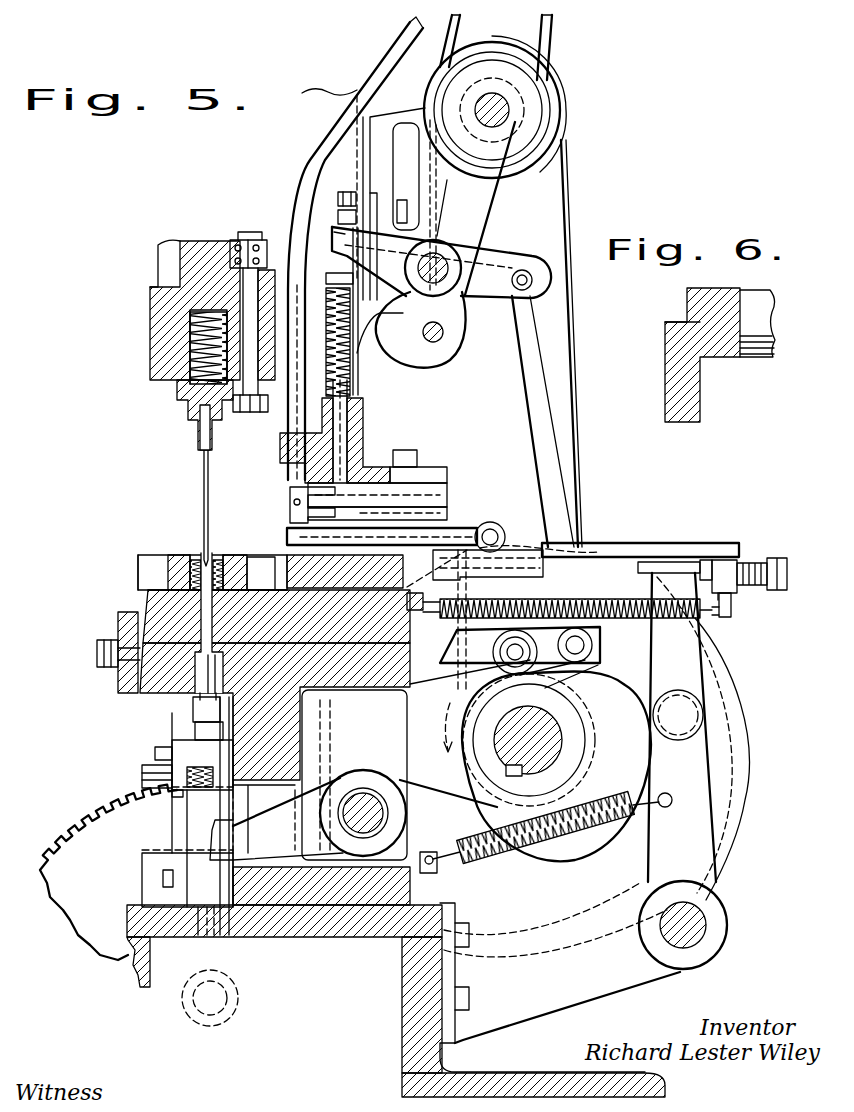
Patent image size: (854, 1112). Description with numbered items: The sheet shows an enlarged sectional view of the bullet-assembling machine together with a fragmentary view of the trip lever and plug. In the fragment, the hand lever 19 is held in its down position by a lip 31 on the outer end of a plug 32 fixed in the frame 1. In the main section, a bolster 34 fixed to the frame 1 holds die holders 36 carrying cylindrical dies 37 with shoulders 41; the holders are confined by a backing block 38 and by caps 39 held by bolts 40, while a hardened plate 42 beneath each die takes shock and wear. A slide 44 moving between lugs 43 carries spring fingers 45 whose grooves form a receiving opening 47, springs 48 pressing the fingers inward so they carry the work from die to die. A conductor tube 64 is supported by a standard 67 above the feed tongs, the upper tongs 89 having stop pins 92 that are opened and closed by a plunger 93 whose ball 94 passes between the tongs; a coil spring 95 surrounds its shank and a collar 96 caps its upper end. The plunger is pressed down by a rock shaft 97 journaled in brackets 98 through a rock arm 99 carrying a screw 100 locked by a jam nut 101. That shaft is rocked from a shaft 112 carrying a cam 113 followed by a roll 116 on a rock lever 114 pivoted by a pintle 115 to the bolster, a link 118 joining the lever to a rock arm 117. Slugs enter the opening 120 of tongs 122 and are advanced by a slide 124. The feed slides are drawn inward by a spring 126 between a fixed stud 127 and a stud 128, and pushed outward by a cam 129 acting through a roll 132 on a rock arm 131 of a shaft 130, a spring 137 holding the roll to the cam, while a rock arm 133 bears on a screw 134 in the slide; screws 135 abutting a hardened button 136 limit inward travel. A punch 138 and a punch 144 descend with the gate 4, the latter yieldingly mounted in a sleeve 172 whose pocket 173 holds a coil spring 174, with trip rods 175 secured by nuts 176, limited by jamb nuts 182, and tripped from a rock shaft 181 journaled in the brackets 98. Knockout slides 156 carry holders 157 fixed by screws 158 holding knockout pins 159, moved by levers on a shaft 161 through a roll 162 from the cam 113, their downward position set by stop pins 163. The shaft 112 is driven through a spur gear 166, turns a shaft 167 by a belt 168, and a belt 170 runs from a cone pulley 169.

In FIG. 5, the frame 1 is at (372, 118).
In FIG. 5, the gate 4 is at (150, 285).
In FIG. 6, the hand lever 19 is at (700, 408).
In FIG. 6, the lip 31 is at (687, 300).
In FIG. 6, the plug 32 is at (752, 358).
In FIG. 5, the bolster 34 is at (275, 920).
In FIG. 5, the die holders 36 is at (150, 600).
In FIG. 5, the dies 37 is at (130, 622).
In FIG. 5, the backing block 38 is at (262, 560).
In FIG. 5, the caps 39 is at (140, 680).
In FIG. 5, the bolts 40 is at (97, 658).
In FIG. 5, the shoulders 41 is at (167, 581).
In FIG. 5, the hardened plate 42 is at (195, 678).
In FIG. 5, the lugs 43 is at (170, 557).
In FIG. 5, the slide 44 is at (168, 572).
In FIG. 5, the spring fingers 45 is at (188, 556).
In FIG. 5, the receiving opening 47 is at (222, 555).
In FIG. 5, the springs 48 is at (192, 560).
In FIG. 5, the conductor tube 64 is at (294, 192).
In FIG. 5, the standard 67 is at (365, 422).
In FIG. 5, the upper tongs 89 is at (430, 458).
In FIG. 5, the stop pins 92 is at (296, 497).
In FIG. 5, the plunger 93 is at (328, 370).
In FIG. 5, the ball 94 is at (367, 445).
In FIG. 5, the coil spring 95 is at (368, 355).
In FIG. 5, the collar 96 is at (331, 276).
In FIG. 5, the rock shaft 97 is at (440, 258).
In FIG. 5, the brackets 98 is at (492, 212).
In FIG. 5, the rock arm 99 is at (334, 234).
In FIG. 5, the screw 100 is at (348, 192).
In FIG. 5, the jam nut 101 is at (338, 216).
In FIG. 5, the shaft 112 is at (555, 750).
In FIG. 5, the cam 113 is at (594, 640).
In FIG. 5, the rock lever 114 is at (452, 680).
In FIG. 5, the pintle 115 is at (430, 655).
In FIG. 5, the roll 116 is at (495, 640).
In FIG. 5, the rock arm 117 is at (518, 262).
In FIG. 5, the link 118 is at (558, 418).
In FIG. 5, the opening 120 is at (285, 535).
In FIG. 5, the tongs 122 is at (455, 527).
In FIG. 5, the slide 124 is at (697, 543).
In FIG. 5, the spring 126 is at (605, 604).
In FIG. 5, the fixed stud 127 is at (450, 584).
In FIG. 5, the stud 128 is at (732, 608).
In FIG. 5, the cam 129 is at (590, 675).
In FIG. 5, the shaft 130 is at (728, 920).
In FIG. 5, the rock arm 131 is at (735, 760).
In FIG. 5, the roll 132 is at (704, 700).
In FIG. 5, the rock arm 133 is at (705, 632).
In FIG. 5, the screw 134 is at (750, 590).
In FIG. 5, the screws 135 is at (762, 560).
In FIG. 5, the hardened button 136 is at (598, 550).
In FIG. 5, the spring 137 is at (595, 845).
In FIG. 5, the punch 138 is at (730, 790).
In FIG. 5, the punch 144 is at (204, 491).
In FIG. 5, the knockout slides 156 is at (165, 893).
In FIG. 5, the holder 157 is at (172, 795).
In FIG. 5, the screw 158 is at (142, 778).
In FIG. 5, the knockout pins 159 is at (193, 712).
In FIG. 5, the shaft 161 is at (363, 790).
In FIG. 5, the roll 162 is at (570, 815).
In FIG. 5, the stop pins 163 is at (203, 938).
In FIG. 5, the spur gear 166 is at (57, 850).
In FIG. 5, the shaft 167 is at (505, 118).
In FIG. 5, the belt 168 is at (572, 336).
In FIG. 5, the cone pulley 169 is at (562, 80).
In FIG. 5, the belt 170 is at (555, 24).
In FIG. 5, the sleeve 172 is at (188, 388).
In FIG. 5, the pocket 173 is at (190, 350).
In FIG. 5, the coil spring 174 is at (190, 328).
In FIG. 5, the trip rods 175 is at (246, 412).
In FIG. 5, the nuts 176 is at (190, 425).
In FIG. 5, the rock shaft 181 is at (445, 338).
In FIG. 5, the jamb nuts 182 is at (232, 242).